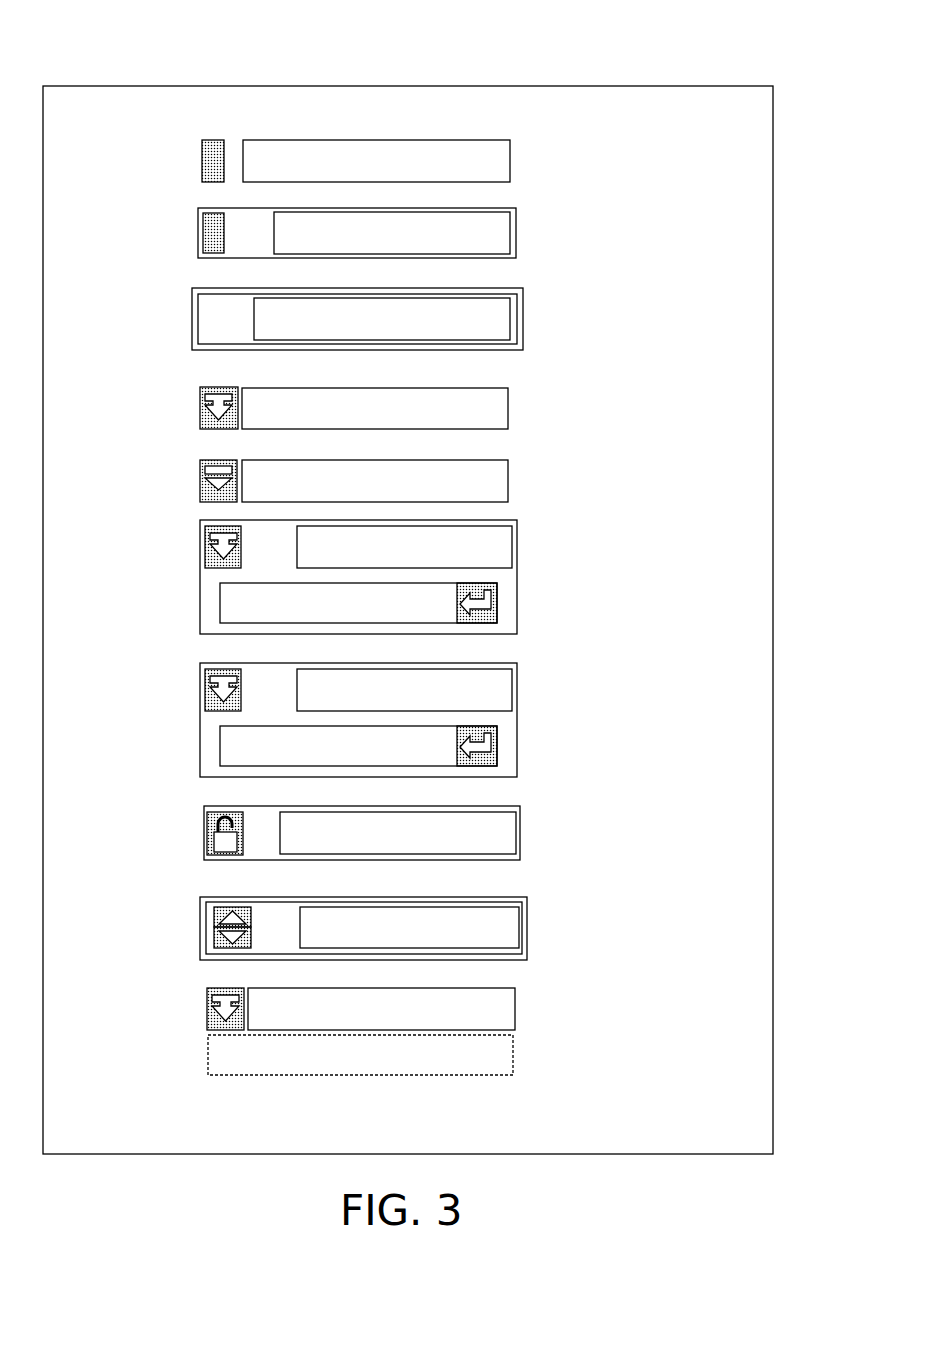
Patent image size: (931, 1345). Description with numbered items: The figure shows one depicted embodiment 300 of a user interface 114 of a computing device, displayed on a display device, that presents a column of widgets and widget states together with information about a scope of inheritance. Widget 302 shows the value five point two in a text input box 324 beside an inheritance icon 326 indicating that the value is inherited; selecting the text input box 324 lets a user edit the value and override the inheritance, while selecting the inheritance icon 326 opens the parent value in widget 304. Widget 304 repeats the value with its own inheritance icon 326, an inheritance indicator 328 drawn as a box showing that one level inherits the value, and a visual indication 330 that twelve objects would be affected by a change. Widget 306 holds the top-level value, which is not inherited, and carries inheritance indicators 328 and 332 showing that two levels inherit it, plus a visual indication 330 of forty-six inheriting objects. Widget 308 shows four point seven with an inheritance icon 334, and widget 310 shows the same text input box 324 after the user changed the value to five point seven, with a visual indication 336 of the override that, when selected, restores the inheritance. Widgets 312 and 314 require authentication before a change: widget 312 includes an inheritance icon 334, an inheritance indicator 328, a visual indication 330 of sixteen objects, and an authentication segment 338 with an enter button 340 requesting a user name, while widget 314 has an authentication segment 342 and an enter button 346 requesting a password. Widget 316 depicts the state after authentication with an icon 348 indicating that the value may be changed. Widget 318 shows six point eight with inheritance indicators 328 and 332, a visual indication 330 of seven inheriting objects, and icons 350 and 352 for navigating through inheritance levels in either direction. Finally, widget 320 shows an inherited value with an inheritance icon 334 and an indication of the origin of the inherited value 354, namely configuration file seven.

The graphical user interface 300 is at (170, 42).
The user interface 114 is at (272, 122).
The widget 302 is at (516, 124).
The widget 304 is at (518, 194).
The widget 306 is at (524, 273).
The widget 308 is at (511, 370).
The widget 310 is at (510, 440).
The widget 312 is at (518, 502).
The widget 314 is at (518, 647).
The widget 316 is at (518, 788).
The widget 318 is at (521, 877).
The widget 320 is at (518, 970).
The text input box 324 is at (243, 141).
The inheritance icon 326 is at (201, 160).
The inheritance indicator 328 is at (516, 250).
The visual indication 330 is at (232, 204).
The inheritance indicator 332 is at (192, 310).
The inheritance icon 334 is at (200, 392).
The visual indication 336 is at (200, 465).
The authentication segment 338 is at (222, 600).
The enter button 340 is at (497, 605).
The authentication segment 342 is at (222, 745).
The enter button 346 is at (497, 748).
The icon 348 is at (207, 820).
The icon 350 is at (214, 916).
The icon 352 is at (214, 938).
The indication of origin of inherited value 354 is at (513, 1052).